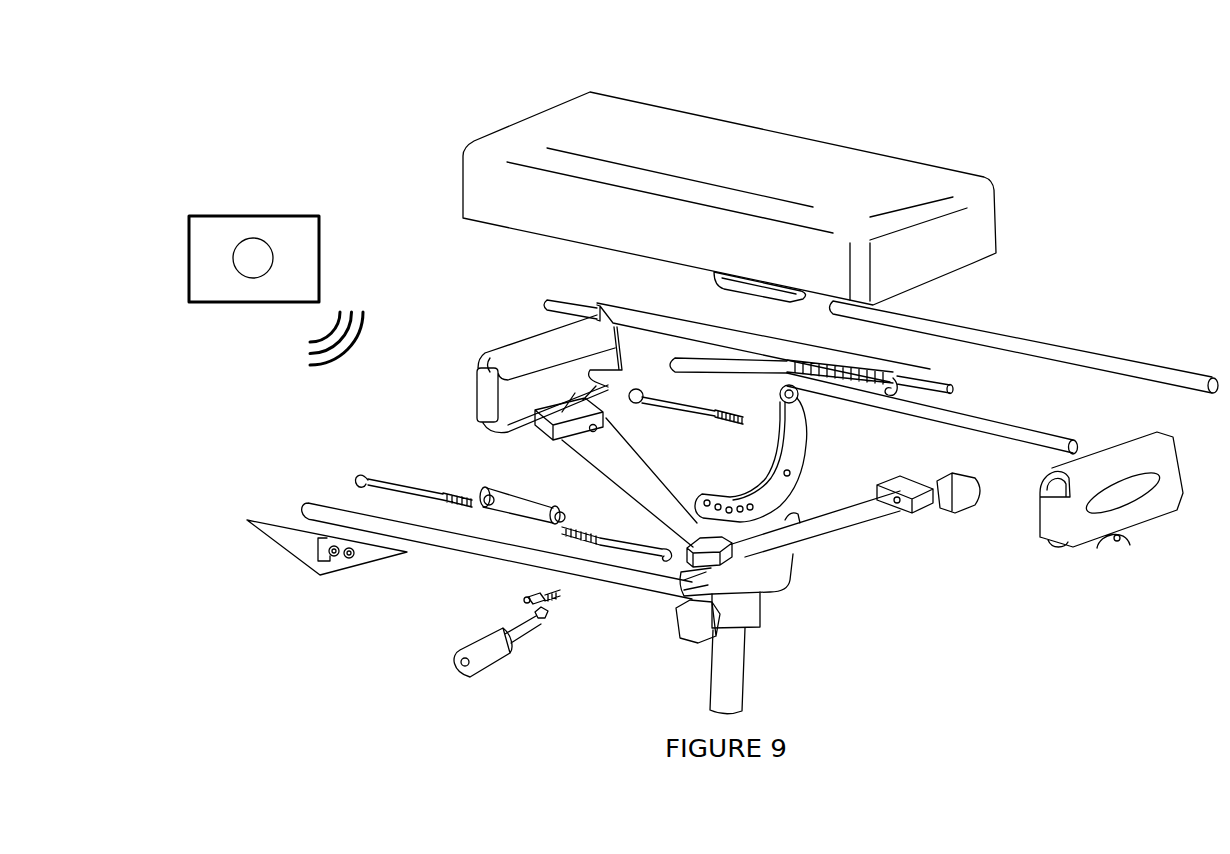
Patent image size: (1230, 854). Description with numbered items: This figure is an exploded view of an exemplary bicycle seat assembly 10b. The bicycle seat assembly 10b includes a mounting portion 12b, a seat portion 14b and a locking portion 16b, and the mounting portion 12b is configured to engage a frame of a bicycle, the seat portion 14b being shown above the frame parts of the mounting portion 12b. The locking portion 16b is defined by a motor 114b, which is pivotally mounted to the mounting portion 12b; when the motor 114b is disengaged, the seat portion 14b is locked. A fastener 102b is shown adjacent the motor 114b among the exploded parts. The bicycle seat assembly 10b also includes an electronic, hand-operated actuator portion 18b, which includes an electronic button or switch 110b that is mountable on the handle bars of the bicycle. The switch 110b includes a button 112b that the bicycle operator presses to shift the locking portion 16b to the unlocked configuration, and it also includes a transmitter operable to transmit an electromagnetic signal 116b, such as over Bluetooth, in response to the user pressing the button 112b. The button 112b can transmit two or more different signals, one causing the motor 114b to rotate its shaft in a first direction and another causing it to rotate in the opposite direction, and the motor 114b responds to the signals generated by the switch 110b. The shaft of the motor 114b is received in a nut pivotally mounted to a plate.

The bicycle seat assembly 10b is at (984, 125).
The seat portion 14b is at (395, 111).
The mounting portion 12b is at (342, 673).
The locking portion 16b is at (457, 726).
The actuator portion 18b is at (900, 711).
The fastener 102b is at (527, 607).
The motor 114b is at (480, 648).
The electronic button or switch 110b is at (275, 183).
The button 112b is at (255, 265).
The signal 116b is at (322, 387).